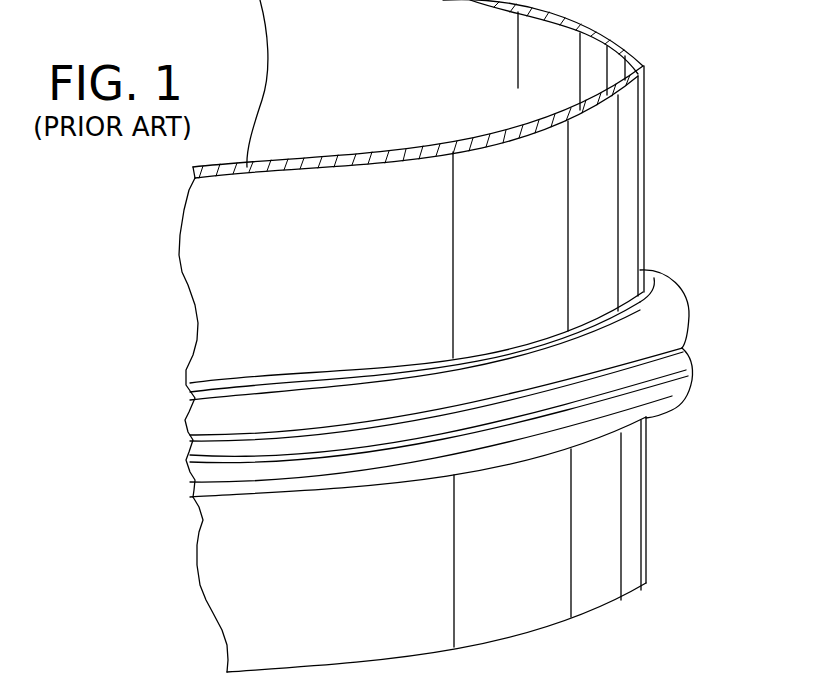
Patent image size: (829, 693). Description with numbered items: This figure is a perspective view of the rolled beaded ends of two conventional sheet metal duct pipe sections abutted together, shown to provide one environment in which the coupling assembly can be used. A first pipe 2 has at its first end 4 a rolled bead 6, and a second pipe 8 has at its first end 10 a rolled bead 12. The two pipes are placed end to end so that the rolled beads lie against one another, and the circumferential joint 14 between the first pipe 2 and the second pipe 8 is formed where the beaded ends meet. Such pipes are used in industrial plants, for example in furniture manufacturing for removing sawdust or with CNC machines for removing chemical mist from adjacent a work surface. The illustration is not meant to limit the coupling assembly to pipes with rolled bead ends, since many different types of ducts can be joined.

The first pipe 2 is at (459, 248).
The first end 4 is at (632, 237).
The rolled bead 6 is at (670, 312).
The second pipe 8 is at (466, 544).
The first end 10 is at (627, 483).
The rolled bead 12 is at (670, 378).
The circumferential joint 14 is at (495, 383).